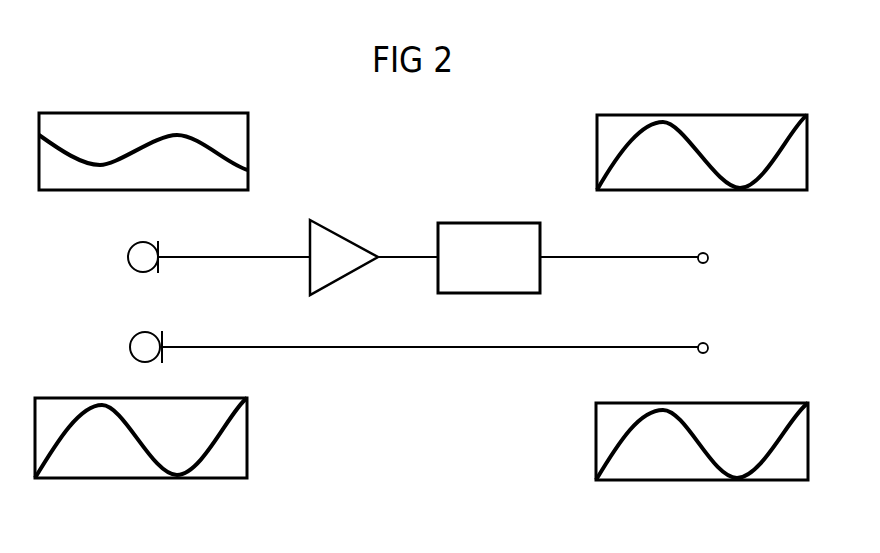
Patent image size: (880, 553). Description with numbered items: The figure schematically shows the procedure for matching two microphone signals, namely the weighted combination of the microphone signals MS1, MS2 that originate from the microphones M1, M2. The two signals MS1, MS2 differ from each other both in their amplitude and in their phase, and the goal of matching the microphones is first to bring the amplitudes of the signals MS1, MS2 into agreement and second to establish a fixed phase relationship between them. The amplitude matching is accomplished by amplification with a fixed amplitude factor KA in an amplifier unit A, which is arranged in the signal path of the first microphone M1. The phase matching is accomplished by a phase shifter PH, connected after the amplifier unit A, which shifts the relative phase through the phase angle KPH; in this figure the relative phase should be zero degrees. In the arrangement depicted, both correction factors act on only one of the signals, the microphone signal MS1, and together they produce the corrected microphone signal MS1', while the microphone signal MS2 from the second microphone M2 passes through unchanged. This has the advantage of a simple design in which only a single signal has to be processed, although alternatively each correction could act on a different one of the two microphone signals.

The microphone signal MS1 is at (143, 129).
The corrected microphone signal MS1' is at (702, 128).
The microphone signal MS2 is at (150, 463).
The microphone M1 is at (128, 257).
The microphone M2 is at (130, 347).
The amplifier unit A is at (344, 240).
The amplitude factor KA is at (349, 215).
The phase shifter PH is at (543, 233).
The phase angle KPH is at (490, 204).